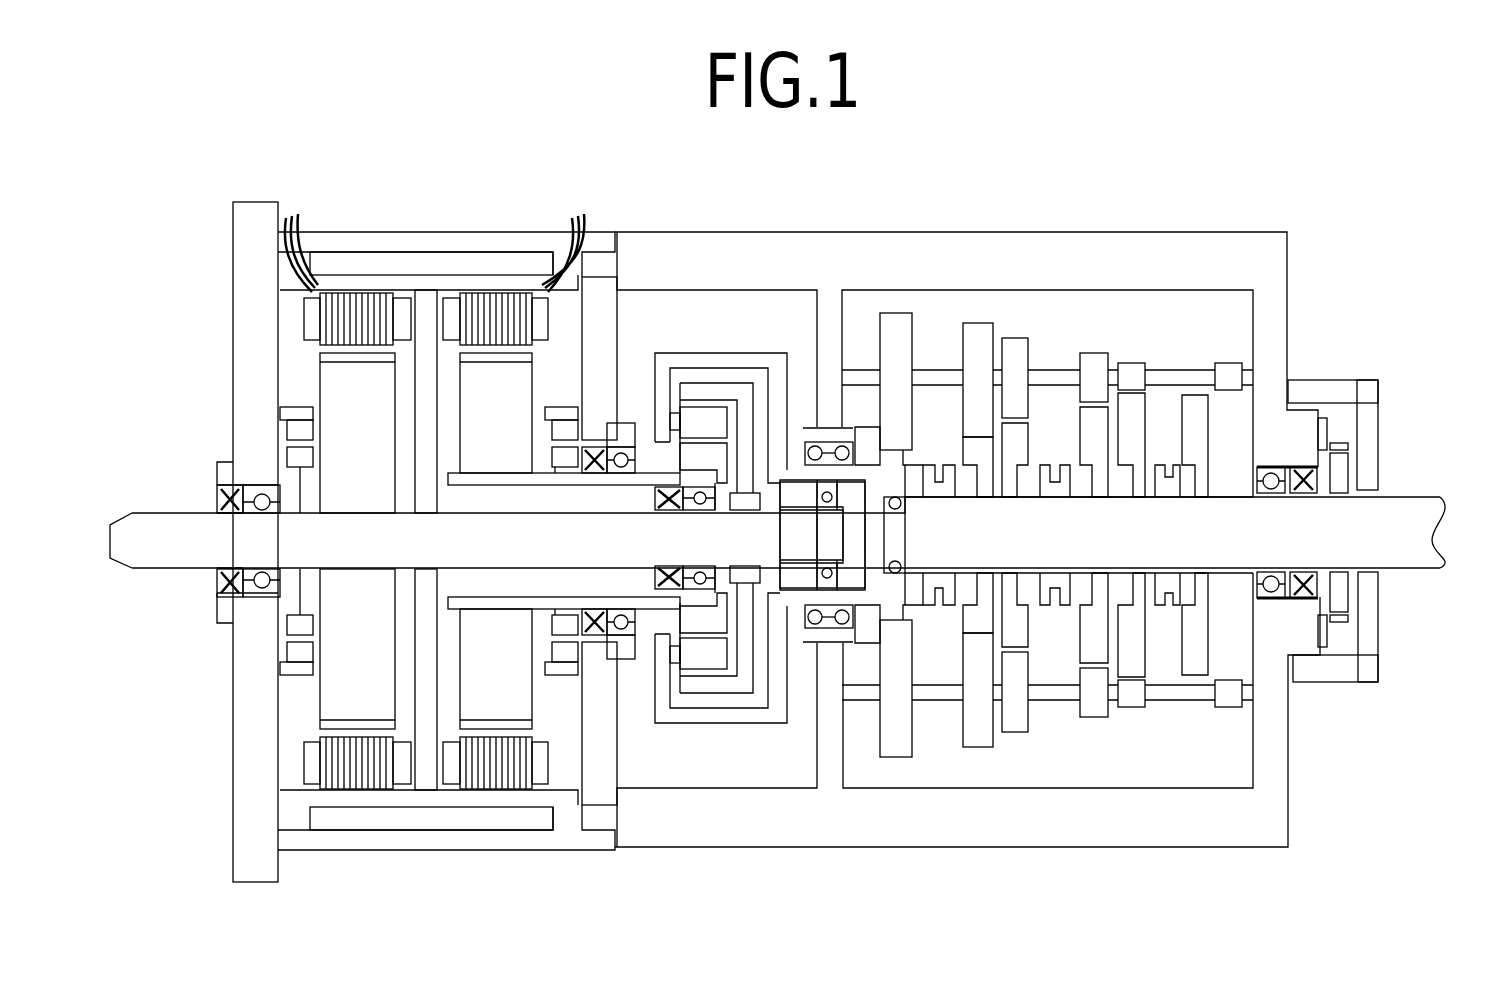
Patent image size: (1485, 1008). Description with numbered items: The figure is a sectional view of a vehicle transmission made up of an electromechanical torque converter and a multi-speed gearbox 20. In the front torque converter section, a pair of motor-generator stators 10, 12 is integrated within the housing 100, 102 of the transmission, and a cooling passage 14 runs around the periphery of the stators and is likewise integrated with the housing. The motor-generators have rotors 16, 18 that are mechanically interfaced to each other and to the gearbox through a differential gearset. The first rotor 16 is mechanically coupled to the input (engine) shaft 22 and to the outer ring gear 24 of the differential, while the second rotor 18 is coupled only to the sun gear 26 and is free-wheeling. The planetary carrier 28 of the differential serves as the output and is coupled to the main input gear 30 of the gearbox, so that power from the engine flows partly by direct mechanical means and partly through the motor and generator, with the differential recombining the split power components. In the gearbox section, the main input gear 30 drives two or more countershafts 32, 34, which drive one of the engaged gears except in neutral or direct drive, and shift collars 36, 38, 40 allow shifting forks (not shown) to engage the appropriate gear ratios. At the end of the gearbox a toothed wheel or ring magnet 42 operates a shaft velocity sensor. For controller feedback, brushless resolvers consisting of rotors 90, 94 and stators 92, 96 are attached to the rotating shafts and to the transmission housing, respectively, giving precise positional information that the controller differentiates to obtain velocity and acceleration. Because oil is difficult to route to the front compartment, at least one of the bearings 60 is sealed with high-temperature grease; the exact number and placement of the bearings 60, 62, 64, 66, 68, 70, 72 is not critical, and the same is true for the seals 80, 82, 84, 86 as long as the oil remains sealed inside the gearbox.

The motor-generator stator 10 is at (345, 300).
The motor-generator stator 12 is at (495, 300).
The cooling passage 14 is at (400, 263).
The first rotor 16 is at (357, 541).
The second rotor 18 is at (564, 541).
The gearbox 20 is at (1062, 320).
The input shaft 22 is at (160, 520).
The outer ring gear 24 is at (693, 390).
The sun gear 26 is at (707, 457).
The planetary carrier 28 is at (743, 363).
The main input gear 30 is at (893, 468).
The countershaft 32 is at (1165, 375).
The countershaft 34 is at (1165, 690).
The shift collar 36 is at (940, 485).
The shift collar 38 is at (1055, 485).
The shift collar 40 is at (1168, 480).
The toothed wheel or ring magnet 42 is at (1338, 480).
The bearing 60 is at (262, 505).
The bearing 62 is at (621, 468).
The bearing 64 is at (700, 505).
The bearing 66 is at (825, 462).
The bearing 68 is at (827, 503).
The bearing 70 is at (898, 517).
The bearing 72 is at (1270, 492).
The seal 80 is at (230, 500).
The seal 82 is at (595, 465).
The seal 84 is at (670, 505).
The seal 86 is at (1303, 492).
The resolver rotor 90 is at (302, 460).
The resolver stator 92 is at (300, 428).
The resolver rotor 94 is at (553, 457).
The resolver stator 96 is at (556, 427).
The housing 100 is at (452, 240).
The housing 102 is at (722, 260).